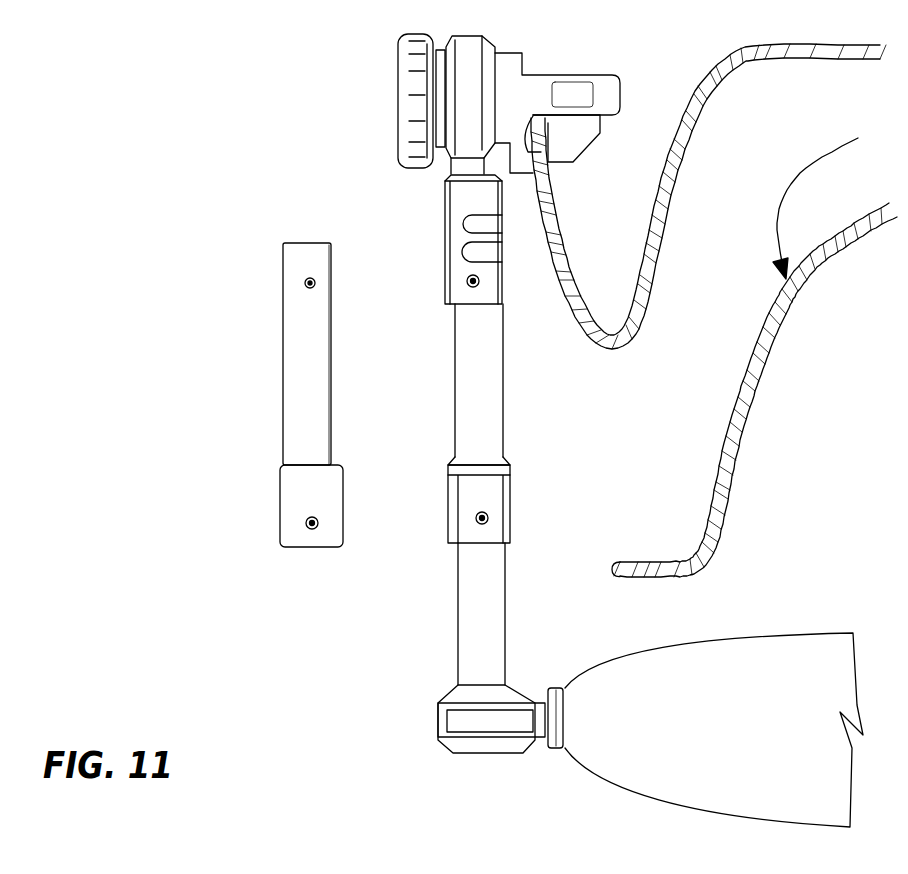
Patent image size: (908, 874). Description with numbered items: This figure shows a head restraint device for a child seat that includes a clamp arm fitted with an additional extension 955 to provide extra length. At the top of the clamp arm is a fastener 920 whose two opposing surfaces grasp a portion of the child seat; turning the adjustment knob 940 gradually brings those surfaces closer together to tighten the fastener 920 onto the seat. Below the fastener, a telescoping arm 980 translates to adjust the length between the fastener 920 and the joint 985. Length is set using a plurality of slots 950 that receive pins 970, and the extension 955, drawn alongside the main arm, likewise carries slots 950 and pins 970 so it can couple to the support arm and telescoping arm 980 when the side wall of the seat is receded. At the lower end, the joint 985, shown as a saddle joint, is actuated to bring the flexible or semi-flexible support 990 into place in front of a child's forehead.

The fastener 920 is at (577, 85).
The adjustment knob 940 is at (413, 128).
The slots 950 is at (490, 517).
The extension 955 is at (462, 373).
The pins 970 is at (479, 280).
The telescoping arm 980 is at (473, 618).
The joint 985 is at (462, 735).
The support 990 is at (633, 777).